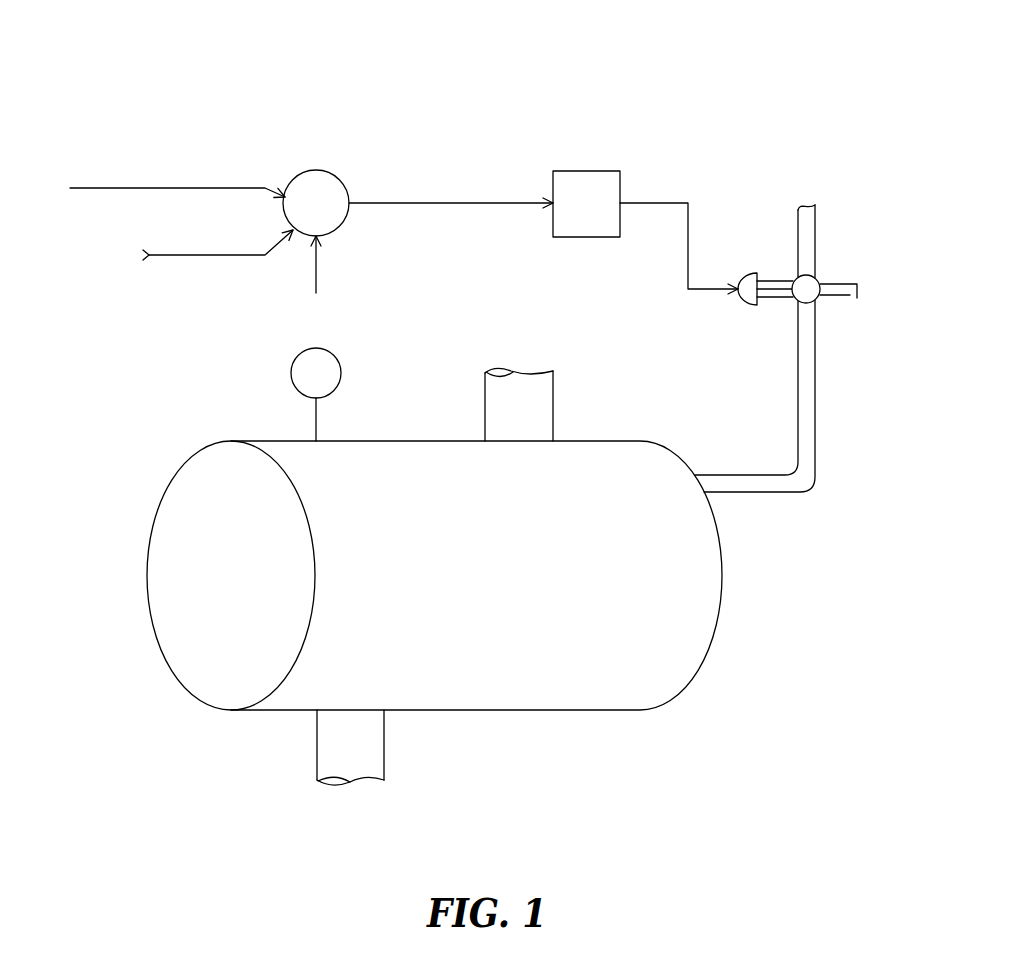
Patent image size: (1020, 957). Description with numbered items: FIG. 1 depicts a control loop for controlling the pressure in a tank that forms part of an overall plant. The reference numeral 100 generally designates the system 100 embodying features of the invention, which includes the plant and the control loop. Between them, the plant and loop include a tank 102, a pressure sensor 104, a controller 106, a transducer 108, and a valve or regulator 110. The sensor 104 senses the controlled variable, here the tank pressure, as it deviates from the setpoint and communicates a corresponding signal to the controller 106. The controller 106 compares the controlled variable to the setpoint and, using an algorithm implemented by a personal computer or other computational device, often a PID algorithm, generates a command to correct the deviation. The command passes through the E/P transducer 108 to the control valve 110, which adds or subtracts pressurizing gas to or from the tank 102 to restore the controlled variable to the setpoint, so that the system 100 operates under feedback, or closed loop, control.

The system 100 is at (172, 78).
The tank 102 is at (485, 710).
The pressure sensor 104 is at (292, 380).
The controller 106 is at (349, 213).
The transducer 108 is at (588, 238).
The valve or regulator 110 is at (796, 303).